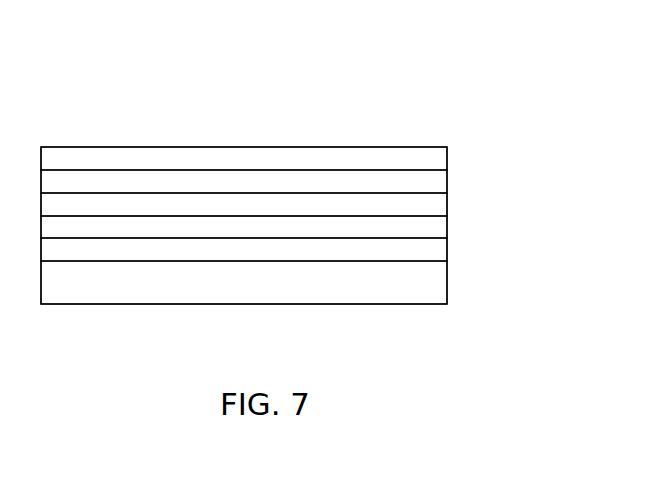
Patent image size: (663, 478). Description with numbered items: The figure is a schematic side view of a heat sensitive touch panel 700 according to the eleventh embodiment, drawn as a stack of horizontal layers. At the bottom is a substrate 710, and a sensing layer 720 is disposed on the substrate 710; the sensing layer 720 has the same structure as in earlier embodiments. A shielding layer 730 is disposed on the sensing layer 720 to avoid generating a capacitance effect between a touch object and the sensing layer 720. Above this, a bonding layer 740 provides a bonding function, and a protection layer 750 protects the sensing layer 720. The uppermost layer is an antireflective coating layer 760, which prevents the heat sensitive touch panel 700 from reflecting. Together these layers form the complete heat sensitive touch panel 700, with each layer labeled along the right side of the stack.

The heat sensitive touch panel 700 is at (270, 57).
The substrate 710 is at (437, 290).
The sensing layer 720 is at (437, 252).
The shielding layer 730 is at (437, 229).
The bonding layer 740 is at (437, 207).
The protection layer 750 is at (438, 188).
The antireflective coating layer 760 is at (433, 159).